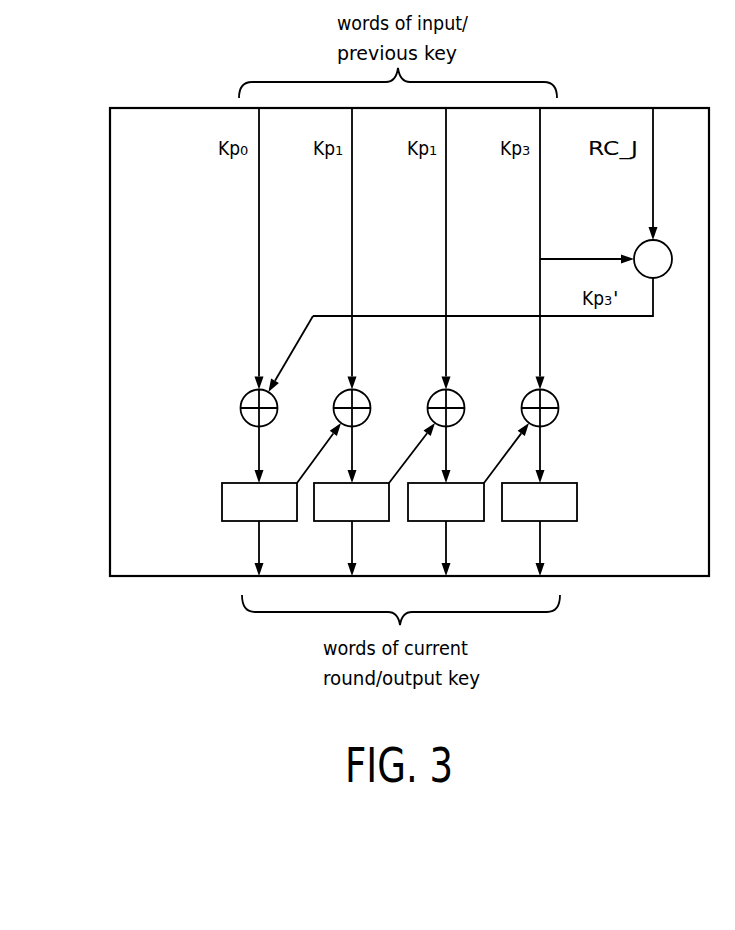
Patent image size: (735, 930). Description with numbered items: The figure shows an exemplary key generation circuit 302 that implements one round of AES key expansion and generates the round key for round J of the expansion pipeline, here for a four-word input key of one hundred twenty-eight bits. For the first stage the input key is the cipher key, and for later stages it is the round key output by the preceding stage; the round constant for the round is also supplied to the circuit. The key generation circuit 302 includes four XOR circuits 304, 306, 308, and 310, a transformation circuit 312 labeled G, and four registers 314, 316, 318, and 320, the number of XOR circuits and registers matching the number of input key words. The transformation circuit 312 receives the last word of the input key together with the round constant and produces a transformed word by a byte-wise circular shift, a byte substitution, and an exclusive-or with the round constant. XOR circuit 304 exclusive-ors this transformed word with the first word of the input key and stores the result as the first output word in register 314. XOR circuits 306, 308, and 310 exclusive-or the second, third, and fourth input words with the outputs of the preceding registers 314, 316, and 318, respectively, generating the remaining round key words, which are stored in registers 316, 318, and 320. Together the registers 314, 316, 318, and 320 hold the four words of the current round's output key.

The key generation circuit 302 is at (152, 200).
The XOR circuit 304 is at (244, 396).
The XOR circuit 306 is at (337, 396).
The XOR circuit 308 is at (431, 396).
The XOR circuit 310 is at (525, 396).
The transformation circuit 312 is at (637, 245).
The register 314 is at (252, 524).
The register 316 is at (345, 524).
The register 318 is at (439, 524).
The register 320 is at (533, 524).